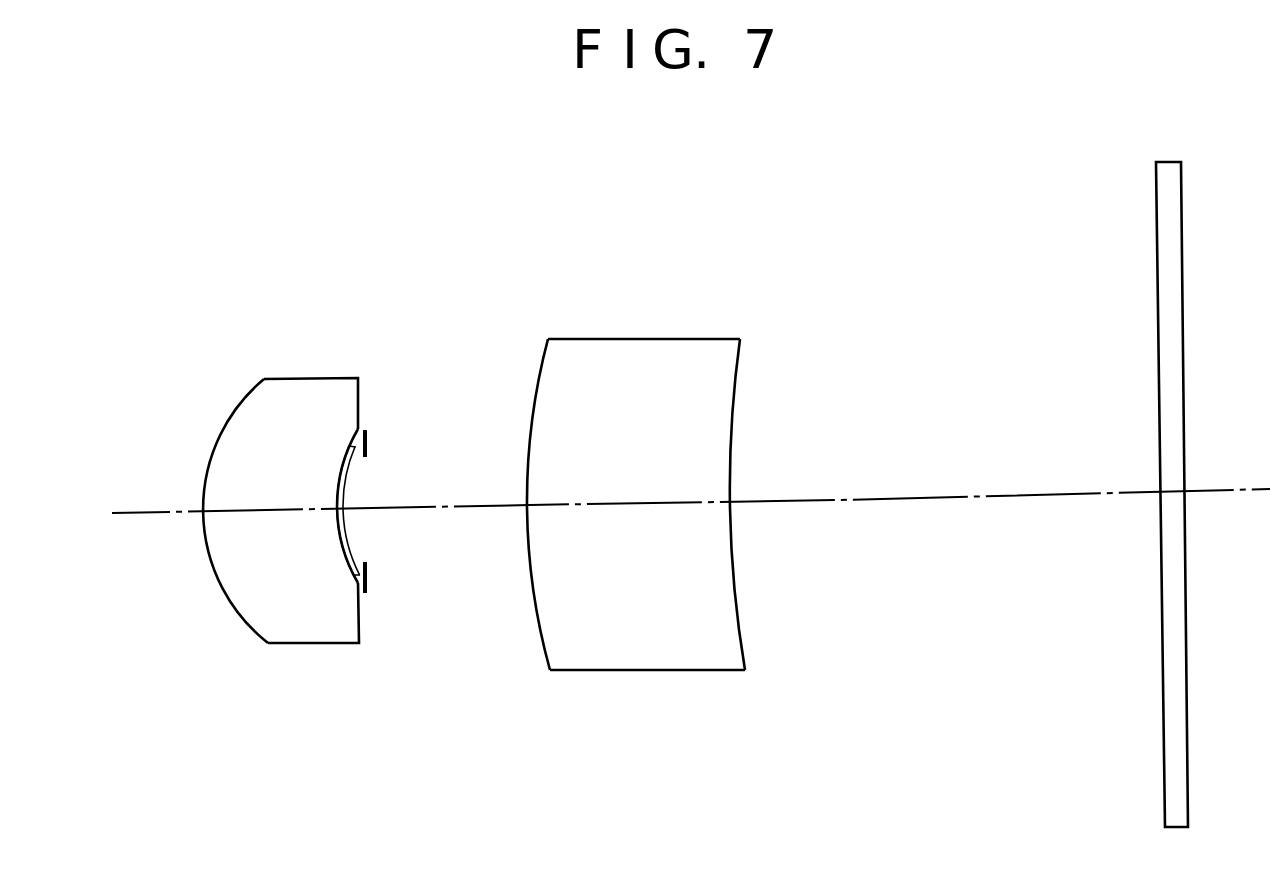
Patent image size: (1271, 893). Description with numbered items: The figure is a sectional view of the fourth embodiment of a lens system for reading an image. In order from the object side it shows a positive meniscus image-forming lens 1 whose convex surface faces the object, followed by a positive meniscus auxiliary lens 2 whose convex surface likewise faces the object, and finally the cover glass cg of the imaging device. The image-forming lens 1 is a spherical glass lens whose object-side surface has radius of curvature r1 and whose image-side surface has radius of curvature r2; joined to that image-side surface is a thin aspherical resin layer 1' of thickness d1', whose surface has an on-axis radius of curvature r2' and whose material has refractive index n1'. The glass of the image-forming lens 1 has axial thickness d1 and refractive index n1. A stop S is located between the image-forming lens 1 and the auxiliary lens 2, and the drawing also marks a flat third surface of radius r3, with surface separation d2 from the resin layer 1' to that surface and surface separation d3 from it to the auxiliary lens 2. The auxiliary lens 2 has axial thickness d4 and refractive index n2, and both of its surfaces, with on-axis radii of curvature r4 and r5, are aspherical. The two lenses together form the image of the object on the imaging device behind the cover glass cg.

The image-forming lens 1 is at (275, 446).
The resin layer 1' is at (415, 439).
The auxiliary lens 2 is at (671, 457).
The radius of curvature of first surface r1 is at (233, 417).
The radius of curvature of second surface r2 is at (354, 444).
The radius of curvature of resin layer surface r2' is at (386, 437).
The radius of curvature of third surface r3 is at (368, 450).
The radius of curvature of fourth surface r4 is at (542, 387).
The radius of curvature of fifth surface r5 is at (737, 380).
The refractive index of first lens n1 is at (280, 510).
The refractive index of resin layer n1' is at (398, 503).
The refractive index of second lens n2 is at (635, 505).
The surface separation of image-forming lens d1 is at (267, 627).
The thickness of resin layer d1' is at (319, 627).
The second surface separation d2 is at (343, 573).
The third surface separation d3 is at (473, 512).
The surface separation of auxiliary lens d4 is at (643, 507).
The stop S is at (368, 580).
The cover glass cg is at (1173, 683).